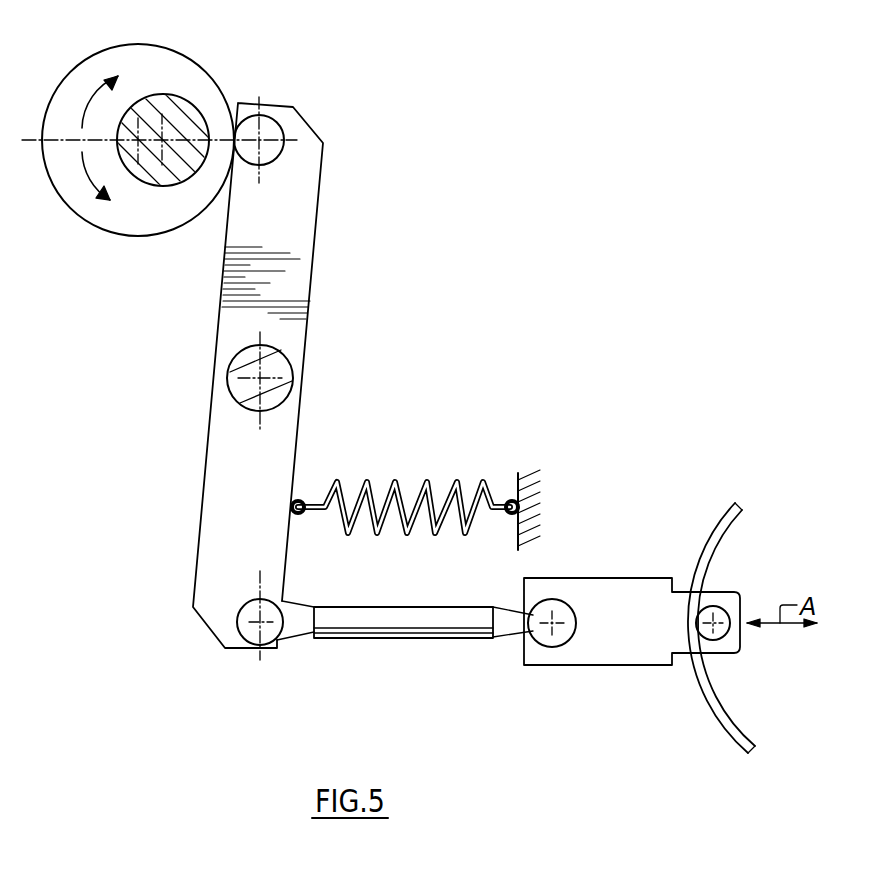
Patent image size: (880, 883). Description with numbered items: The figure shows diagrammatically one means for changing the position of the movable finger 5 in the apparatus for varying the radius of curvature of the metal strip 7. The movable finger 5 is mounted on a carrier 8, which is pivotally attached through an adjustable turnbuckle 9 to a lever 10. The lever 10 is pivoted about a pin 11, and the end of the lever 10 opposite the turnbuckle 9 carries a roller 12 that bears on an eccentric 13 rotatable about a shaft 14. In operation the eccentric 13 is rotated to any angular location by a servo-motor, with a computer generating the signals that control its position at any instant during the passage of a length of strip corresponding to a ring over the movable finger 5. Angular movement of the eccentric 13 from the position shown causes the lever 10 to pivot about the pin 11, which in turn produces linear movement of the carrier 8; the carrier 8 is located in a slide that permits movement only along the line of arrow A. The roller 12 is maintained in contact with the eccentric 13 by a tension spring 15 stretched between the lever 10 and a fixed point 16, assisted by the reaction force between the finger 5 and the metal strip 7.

The movable finger 5 is at (712, 604).
The metal strip 7 is at (727, 527).
The carrier 8 is at (628, 653).
The adjustable turnbuckle 9 is at (393, 638).
The lever 10 is at (223, 473).
The pin 11 is at (272, 357).
The roller 12 is at (278, 130).
The eccentric 13 is at (150, 221).
The shaft 14 is at (180, 122).
The tension spring 15 is at (424, 483).
The fixed point 16 is at (518, 475).